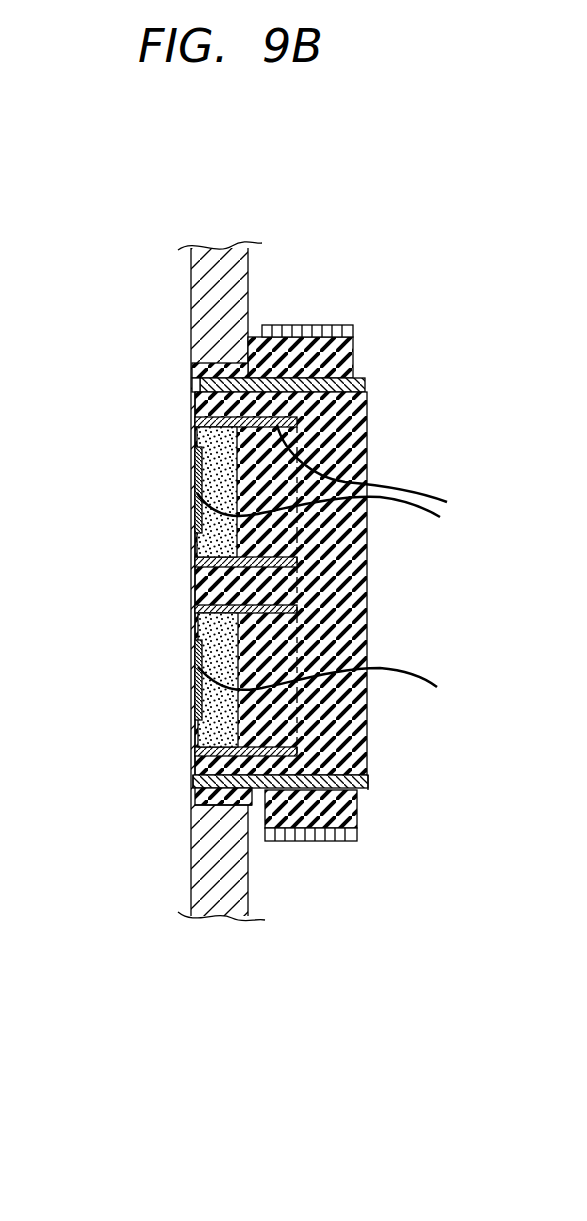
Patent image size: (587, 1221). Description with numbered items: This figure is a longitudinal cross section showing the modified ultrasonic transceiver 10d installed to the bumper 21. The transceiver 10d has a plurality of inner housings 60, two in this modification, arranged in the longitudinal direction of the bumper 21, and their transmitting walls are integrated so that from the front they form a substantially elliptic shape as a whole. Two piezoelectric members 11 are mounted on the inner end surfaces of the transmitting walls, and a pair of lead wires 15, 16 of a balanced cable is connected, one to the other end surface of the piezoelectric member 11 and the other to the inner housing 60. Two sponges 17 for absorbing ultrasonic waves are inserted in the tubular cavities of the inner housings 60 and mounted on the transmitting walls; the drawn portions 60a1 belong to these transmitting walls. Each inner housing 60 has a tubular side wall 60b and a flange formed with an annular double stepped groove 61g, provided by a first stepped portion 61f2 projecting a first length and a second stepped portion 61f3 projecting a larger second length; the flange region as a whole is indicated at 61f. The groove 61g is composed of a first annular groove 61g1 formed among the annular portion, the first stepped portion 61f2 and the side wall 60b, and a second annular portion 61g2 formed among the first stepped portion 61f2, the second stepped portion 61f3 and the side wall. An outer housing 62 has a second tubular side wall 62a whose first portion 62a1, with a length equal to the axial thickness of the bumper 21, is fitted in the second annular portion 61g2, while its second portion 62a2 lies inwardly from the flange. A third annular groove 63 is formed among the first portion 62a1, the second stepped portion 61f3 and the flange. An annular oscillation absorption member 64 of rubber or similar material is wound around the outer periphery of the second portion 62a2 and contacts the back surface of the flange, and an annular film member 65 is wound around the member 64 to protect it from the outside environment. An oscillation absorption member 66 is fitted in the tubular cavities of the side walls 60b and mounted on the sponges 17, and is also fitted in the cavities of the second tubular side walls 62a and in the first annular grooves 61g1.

The ultrasonic transceiver 10d is at (291, 228).
The bumper 21 is at (191, 262).
The third annular groove 63 is at (253, 356).
The annular oscillation absorption member 64 is at (247, 366).
The annular film member 65 is at (318, 335).
The annular double stepped groove 61g is at (197, 375).
The first annular groove 61g1 is at (198, 394).
The second annular portion 61g2 is at (196, 375).
The oscillation absorption member 66 is at (367, 410).
The side wall 61f is at (196, 408).
The sponge 17 is at (197, 425).
The piezoelectric member 11 is at (196, 521).
The recess side portion 60a1 is at (195, 543).
The lead wire 16 is at (432, 492).
The lead wire 15 is at (418, 518).
The outer housing 62 is at (370, 782).
The second tubular side wall 62a is at (251, 894).
The first portion of the second tubular side wall 62a1 is at (250, 806).
The second portion of the second tubular side wall 62a2 is at (365, 792).
The first stepped portion 61f2 is at (195, 785).
The second stepped portion 61f3 is at (199, 803).
The tubular side wall 60b is at (291, 793).
The inner housing 60 is at (246, 640).